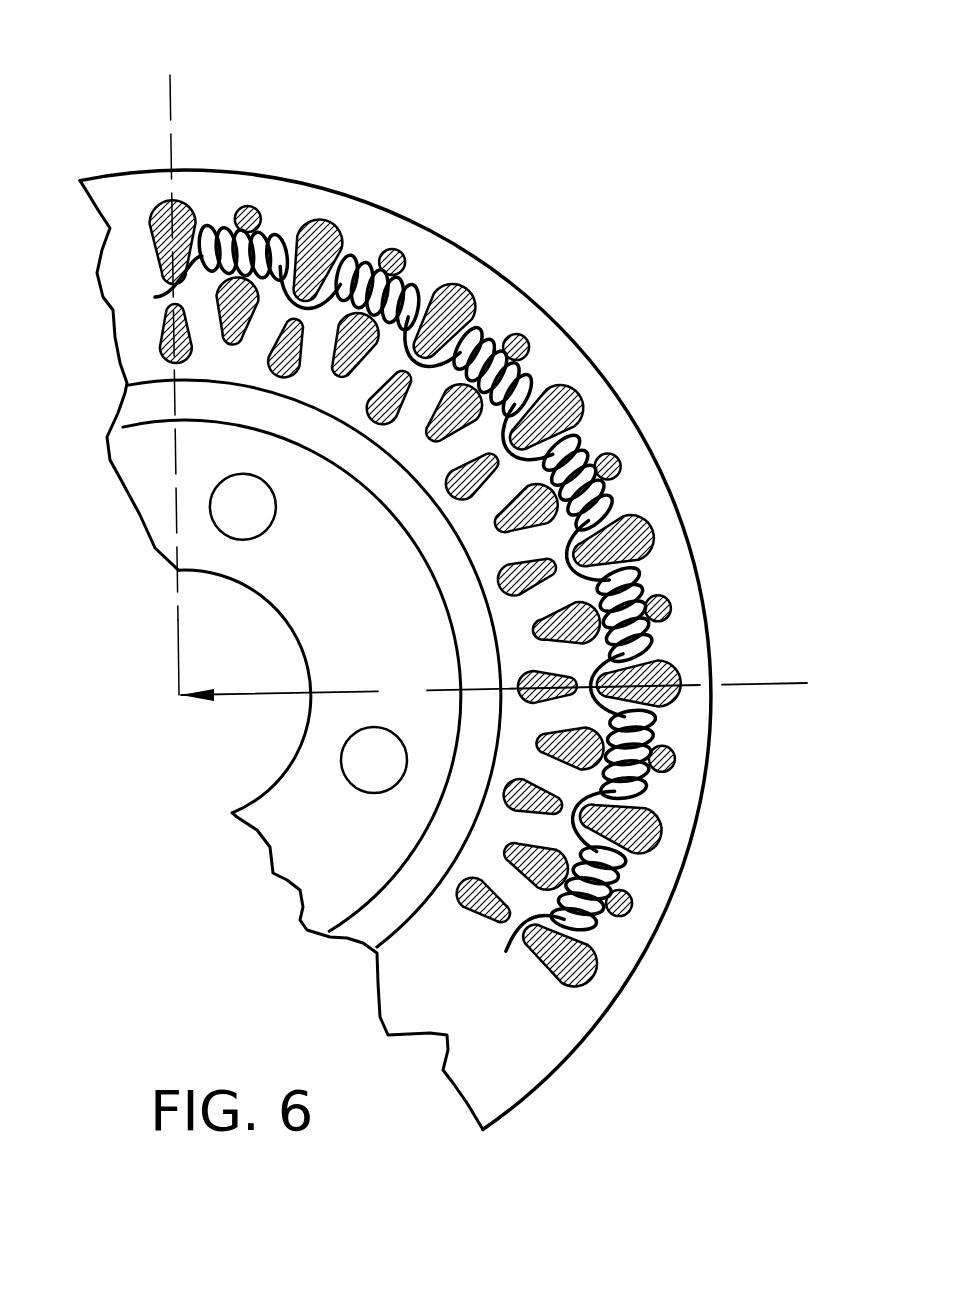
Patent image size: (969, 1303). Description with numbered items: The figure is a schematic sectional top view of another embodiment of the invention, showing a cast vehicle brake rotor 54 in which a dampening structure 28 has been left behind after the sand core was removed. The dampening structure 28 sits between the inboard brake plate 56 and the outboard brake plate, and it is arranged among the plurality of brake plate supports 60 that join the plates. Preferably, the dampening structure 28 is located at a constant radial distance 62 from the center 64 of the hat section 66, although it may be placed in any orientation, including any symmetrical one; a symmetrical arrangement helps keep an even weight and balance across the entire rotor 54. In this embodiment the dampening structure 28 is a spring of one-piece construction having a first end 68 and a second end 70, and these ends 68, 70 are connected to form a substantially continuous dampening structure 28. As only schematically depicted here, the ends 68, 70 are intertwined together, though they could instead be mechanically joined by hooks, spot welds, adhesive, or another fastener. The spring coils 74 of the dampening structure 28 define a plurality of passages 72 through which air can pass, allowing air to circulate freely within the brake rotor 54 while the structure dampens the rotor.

The dampening structure 28 is at (650, 592).
The brake rotor 54 is at (376, 148).
The inboard brake plate 56 is at (210, 193).
The brake plate supports 60 is at (396, 249).
The radial distance 62 is at (494, 694).
The center 64 is at (178, 642).
The hat section 66 is at (337, 847).
The first end 68 is at (620, 513).
The second end 70 is at (570, 433).
The passages 72 is at (603, 798).
The spring coils 74 is at (538, 372).